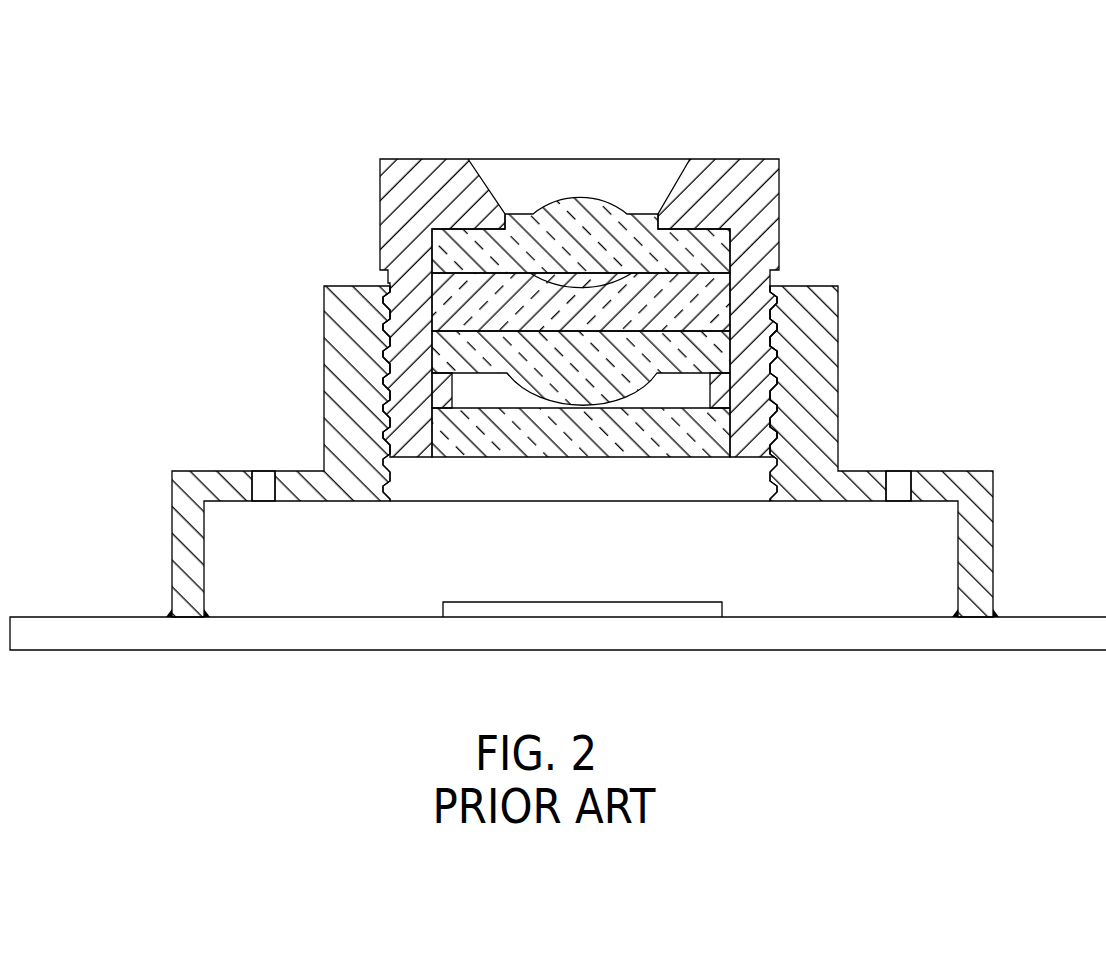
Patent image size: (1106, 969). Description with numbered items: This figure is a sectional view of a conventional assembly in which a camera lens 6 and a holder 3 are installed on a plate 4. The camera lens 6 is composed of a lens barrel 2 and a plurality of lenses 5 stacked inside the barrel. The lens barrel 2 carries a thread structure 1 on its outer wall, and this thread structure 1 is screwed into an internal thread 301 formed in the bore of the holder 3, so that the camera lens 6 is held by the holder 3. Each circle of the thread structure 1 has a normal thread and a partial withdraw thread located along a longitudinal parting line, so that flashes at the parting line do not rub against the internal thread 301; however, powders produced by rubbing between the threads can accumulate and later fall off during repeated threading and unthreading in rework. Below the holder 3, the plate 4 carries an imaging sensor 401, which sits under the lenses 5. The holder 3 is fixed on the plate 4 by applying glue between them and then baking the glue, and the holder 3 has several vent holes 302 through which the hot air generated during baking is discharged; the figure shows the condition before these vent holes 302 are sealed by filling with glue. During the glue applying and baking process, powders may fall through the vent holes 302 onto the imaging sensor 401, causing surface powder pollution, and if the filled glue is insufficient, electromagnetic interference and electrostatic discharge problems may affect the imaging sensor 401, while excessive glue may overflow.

The thread structure 1 is at (782, 284).
The lens barrel 2 is at (758, 158).
The holder 3 is at (845, 386).
The internal thread 301 is at (779, 331).
The vent holes 302 is at (266, 476).
The plate 4 is at (860, 652).
The imaging sensor 401 is at (688, 608).
The lenses 5 is at (580, 218).
The camera lens 6 is at (638, 368).